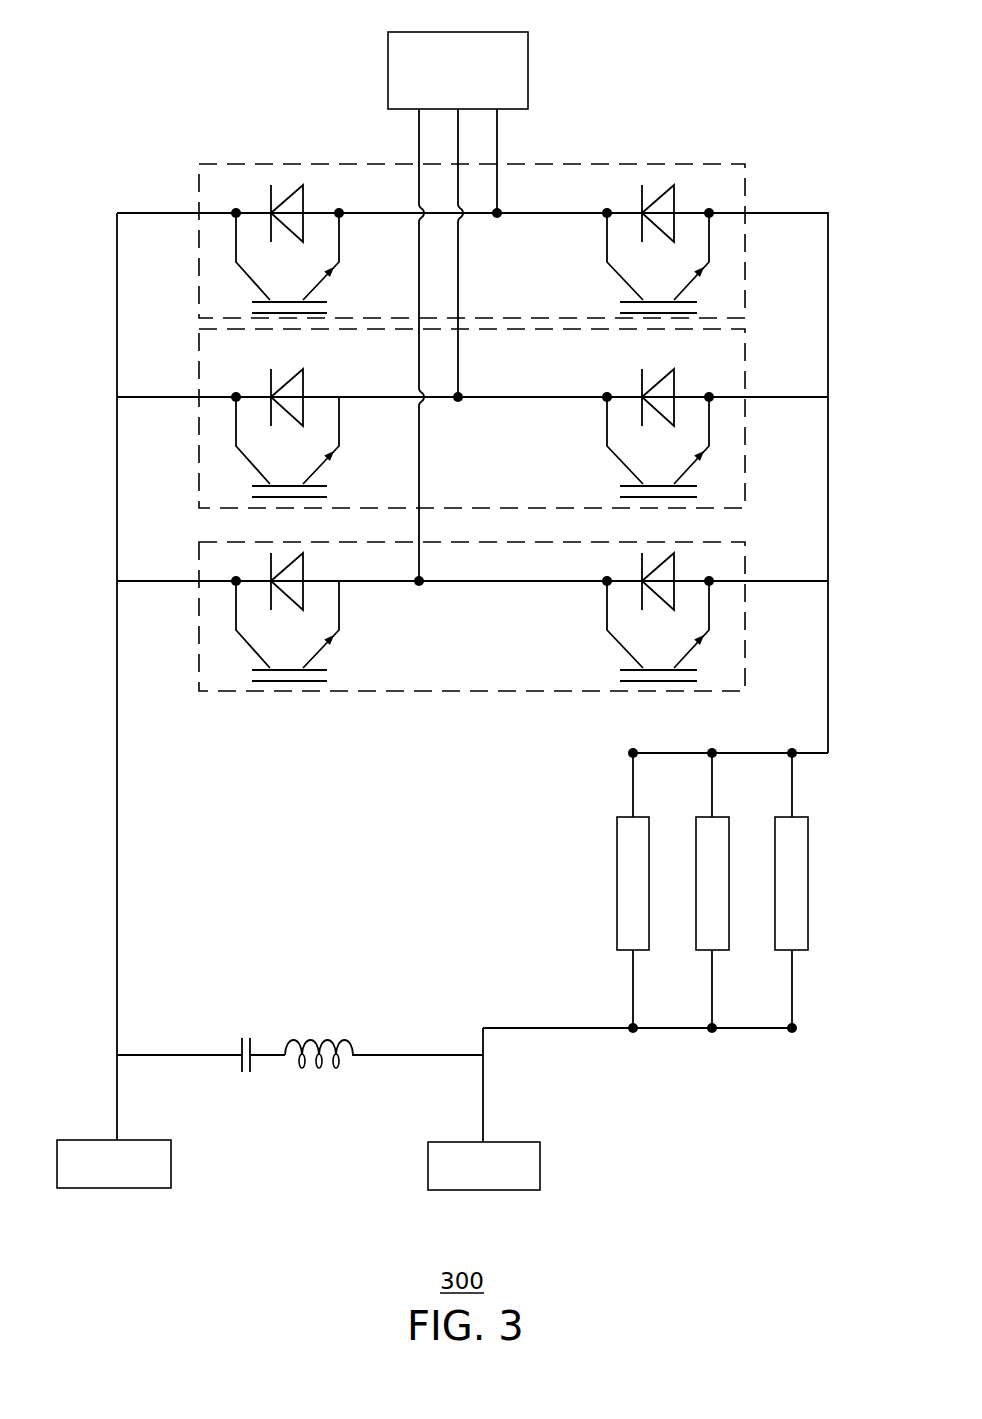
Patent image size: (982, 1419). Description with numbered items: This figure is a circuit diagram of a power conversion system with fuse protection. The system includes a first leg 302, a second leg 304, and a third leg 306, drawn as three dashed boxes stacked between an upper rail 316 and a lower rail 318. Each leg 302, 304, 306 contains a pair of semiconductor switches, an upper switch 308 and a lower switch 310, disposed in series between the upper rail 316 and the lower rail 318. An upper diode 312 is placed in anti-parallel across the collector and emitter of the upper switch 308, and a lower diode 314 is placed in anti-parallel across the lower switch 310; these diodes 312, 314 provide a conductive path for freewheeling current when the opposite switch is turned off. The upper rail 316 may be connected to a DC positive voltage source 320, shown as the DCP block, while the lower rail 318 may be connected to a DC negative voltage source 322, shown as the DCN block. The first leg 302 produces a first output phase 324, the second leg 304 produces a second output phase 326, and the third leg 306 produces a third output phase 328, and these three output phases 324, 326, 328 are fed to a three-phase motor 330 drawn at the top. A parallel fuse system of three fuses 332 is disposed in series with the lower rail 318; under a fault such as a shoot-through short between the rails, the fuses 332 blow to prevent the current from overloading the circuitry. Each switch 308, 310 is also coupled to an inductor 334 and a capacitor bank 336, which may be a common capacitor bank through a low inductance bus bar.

The first leg 302 is at (198, 553).
The second leg 304 is at (198, 367).
The third leg 306 is at (248, 163).
The upper switch 308 is at (333, 286).
The lower switch 310 is at (608, 281).
The upper diode 312 is at (303, 190).
The lower diode 314 is at (675, 192).
The upper rail 316 is at (241, 669).
The lower rail 318 is at (651, 476).
The DC positive voltage source 320 is at (171, 1155).
The DC negative voltage source 322 is at (428, 1162).
The first output phase 324 is at (419, 515).
The second output phase 326 is at (458, 352).
The third output phase 328 is at (497, 183).
The three-phase motor 330 is at (528, 62).
The fuses 332 is at (780, 815).
The inductor 334 is at (320, 1026).
The capacitor bank 336 is at (245, 1026).